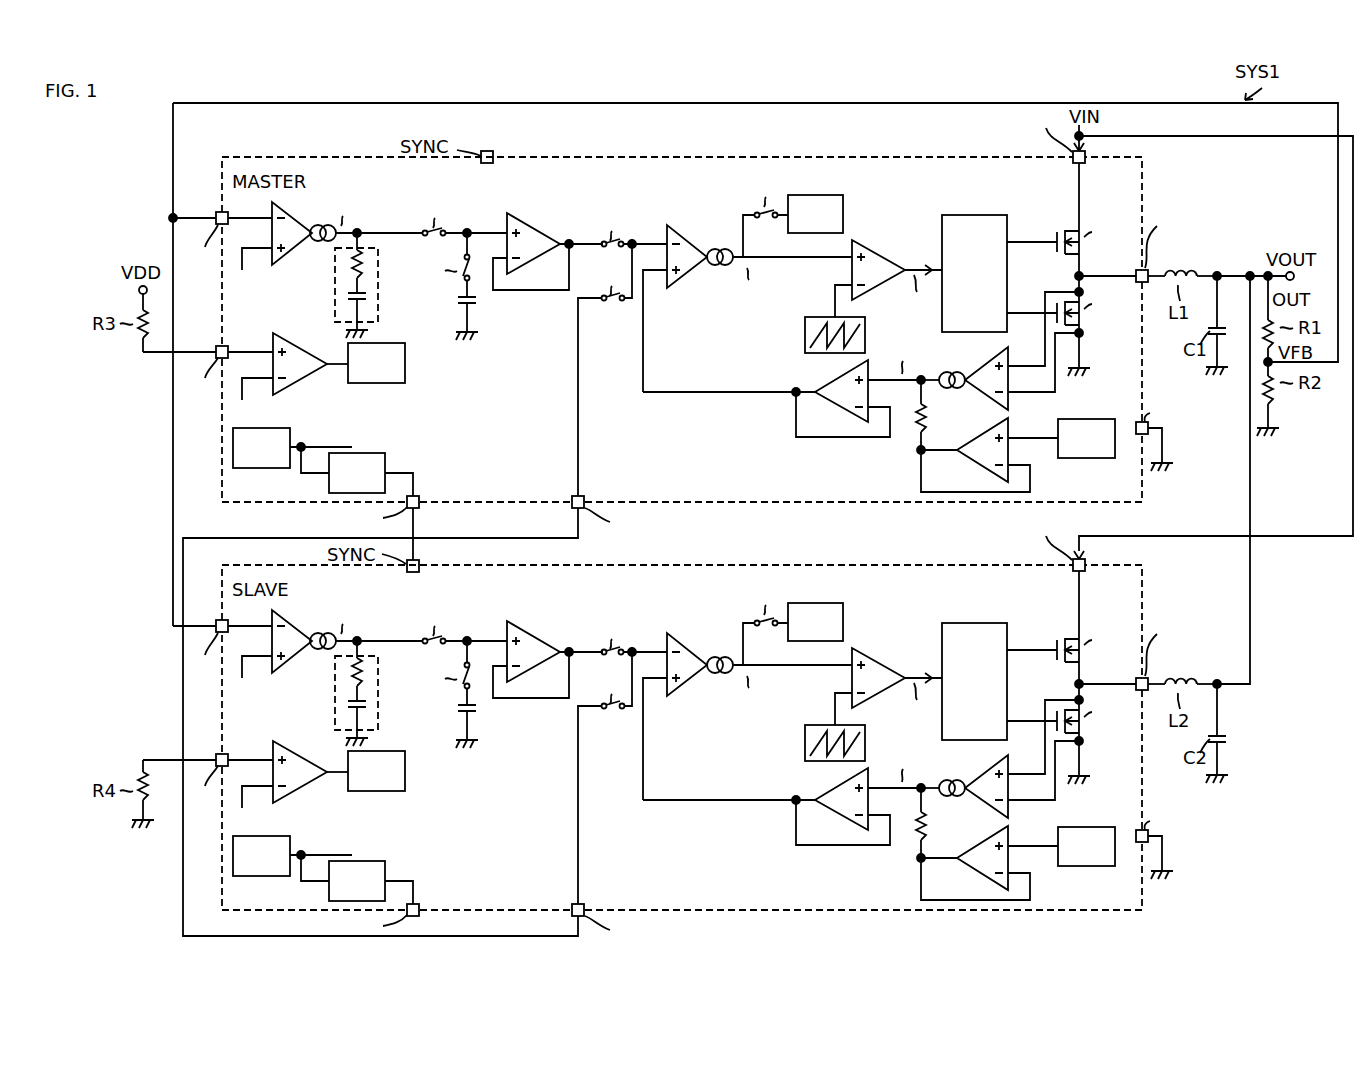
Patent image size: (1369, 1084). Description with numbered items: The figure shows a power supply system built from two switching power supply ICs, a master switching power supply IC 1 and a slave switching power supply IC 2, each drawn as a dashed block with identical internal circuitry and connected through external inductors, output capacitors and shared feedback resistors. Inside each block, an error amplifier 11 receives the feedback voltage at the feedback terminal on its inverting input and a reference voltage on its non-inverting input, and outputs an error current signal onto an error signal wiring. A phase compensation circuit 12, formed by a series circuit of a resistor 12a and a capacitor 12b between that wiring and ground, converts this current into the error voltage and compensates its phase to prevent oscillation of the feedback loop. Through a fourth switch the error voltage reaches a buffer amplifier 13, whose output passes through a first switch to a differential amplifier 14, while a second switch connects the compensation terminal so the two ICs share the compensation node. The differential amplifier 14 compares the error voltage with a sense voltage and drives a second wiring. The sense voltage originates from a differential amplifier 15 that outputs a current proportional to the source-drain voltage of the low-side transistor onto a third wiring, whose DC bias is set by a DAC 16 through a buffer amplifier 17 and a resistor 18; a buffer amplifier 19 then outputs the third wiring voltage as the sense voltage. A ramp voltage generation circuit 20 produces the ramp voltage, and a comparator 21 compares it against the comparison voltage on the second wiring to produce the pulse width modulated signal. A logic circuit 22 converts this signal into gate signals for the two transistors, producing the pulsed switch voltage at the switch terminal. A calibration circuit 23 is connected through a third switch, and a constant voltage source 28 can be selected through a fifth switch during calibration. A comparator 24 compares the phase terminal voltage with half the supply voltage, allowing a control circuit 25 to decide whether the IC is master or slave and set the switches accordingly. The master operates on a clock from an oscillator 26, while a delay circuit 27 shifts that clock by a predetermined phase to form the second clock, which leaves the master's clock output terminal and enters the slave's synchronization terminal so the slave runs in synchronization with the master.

The switching power supply IC 1 is at (886, 156).
The switching power supply IC 2 is at (886, 565).
The error amplifier 11 is at (299, 216).
The phase compensation circuit 12 is at (323, 287).
The resistor 12a is at (350, 280).
The capacitor 12b is at (345, 301).
The buffer amplifier 13 is at (537, 233).
The differential amplifier 14 is at (688, 241).
The differential amplifier 15 is at (988, 360).
The DAC 16 is at (1086, 419).
The buffer amplifier 17 is at (988, 435).
The resistor 18 is at (926, 425).
The buffer amplifier 19 is at (827, 376).
The ramp voltage generation circuit 20 is at (865, 340).
The comparator 21 is at (880, 255).
The logic circuit 22 is at (973, 214).
The calibration circuit 23 is at (817, 195).
The comparator 24 is at (307, 347).
The control circuit 25 is at (406, 364).
The oscillator 26 is at (262, 470).
The delay circuit 27 is at (386, 461).
The constant voltage source 28 is at (458, 301).